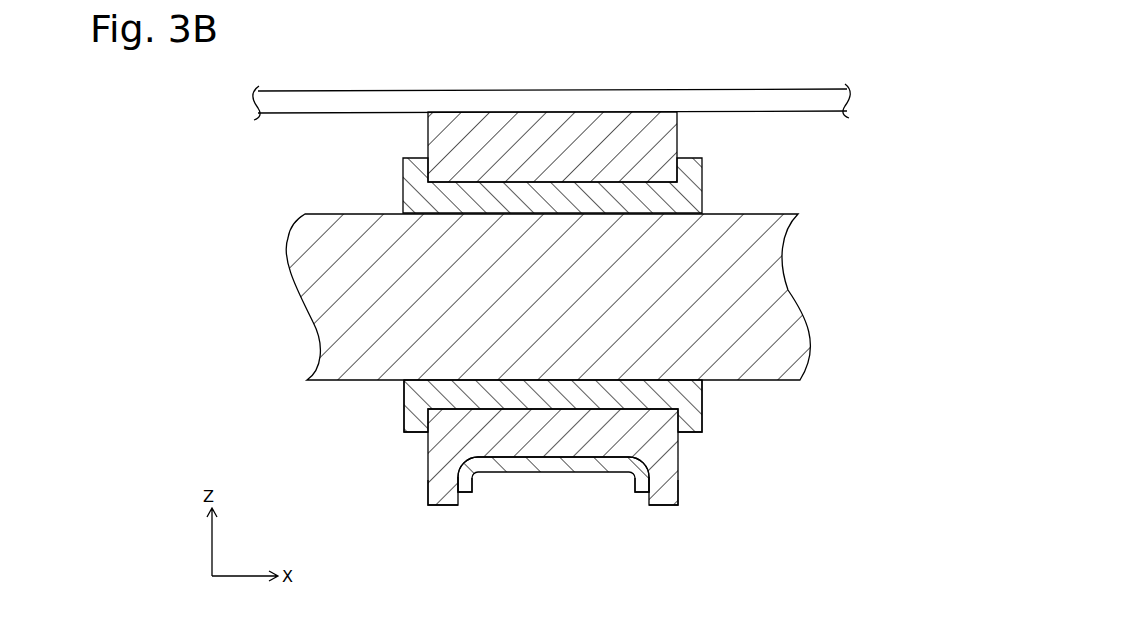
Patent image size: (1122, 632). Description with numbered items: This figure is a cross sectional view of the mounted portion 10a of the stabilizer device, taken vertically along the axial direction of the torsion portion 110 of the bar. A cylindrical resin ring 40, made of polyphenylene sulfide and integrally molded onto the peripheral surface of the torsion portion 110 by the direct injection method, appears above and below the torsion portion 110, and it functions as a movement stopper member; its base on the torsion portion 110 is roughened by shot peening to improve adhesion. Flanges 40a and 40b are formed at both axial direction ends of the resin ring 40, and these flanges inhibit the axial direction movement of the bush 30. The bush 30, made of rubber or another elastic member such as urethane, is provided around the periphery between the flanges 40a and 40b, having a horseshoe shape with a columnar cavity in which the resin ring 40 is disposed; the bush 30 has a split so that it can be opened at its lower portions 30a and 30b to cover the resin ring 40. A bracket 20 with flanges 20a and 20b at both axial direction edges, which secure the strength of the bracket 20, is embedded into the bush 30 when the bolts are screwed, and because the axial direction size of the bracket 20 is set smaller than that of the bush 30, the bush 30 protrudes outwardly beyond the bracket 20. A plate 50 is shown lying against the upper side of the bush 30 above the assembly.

The panel 50 is at (759, 100).
The torsion portion 110 is at (788, 302).
The resin ring 40 is at (696, 193).
The flange 40a is at (412, 418).
The flange 40b is at (688, 411).
The bush 30 is at (666, 144).
The split portion 30a is at (438, 496).
The leg portion of support member 30b is at (670, 489).
The bracket 20 is at (537, 472).
The flange 20a is at (468, 497).
The flange 20b is at (637, 493).
The portion 10a is at (524, 526).